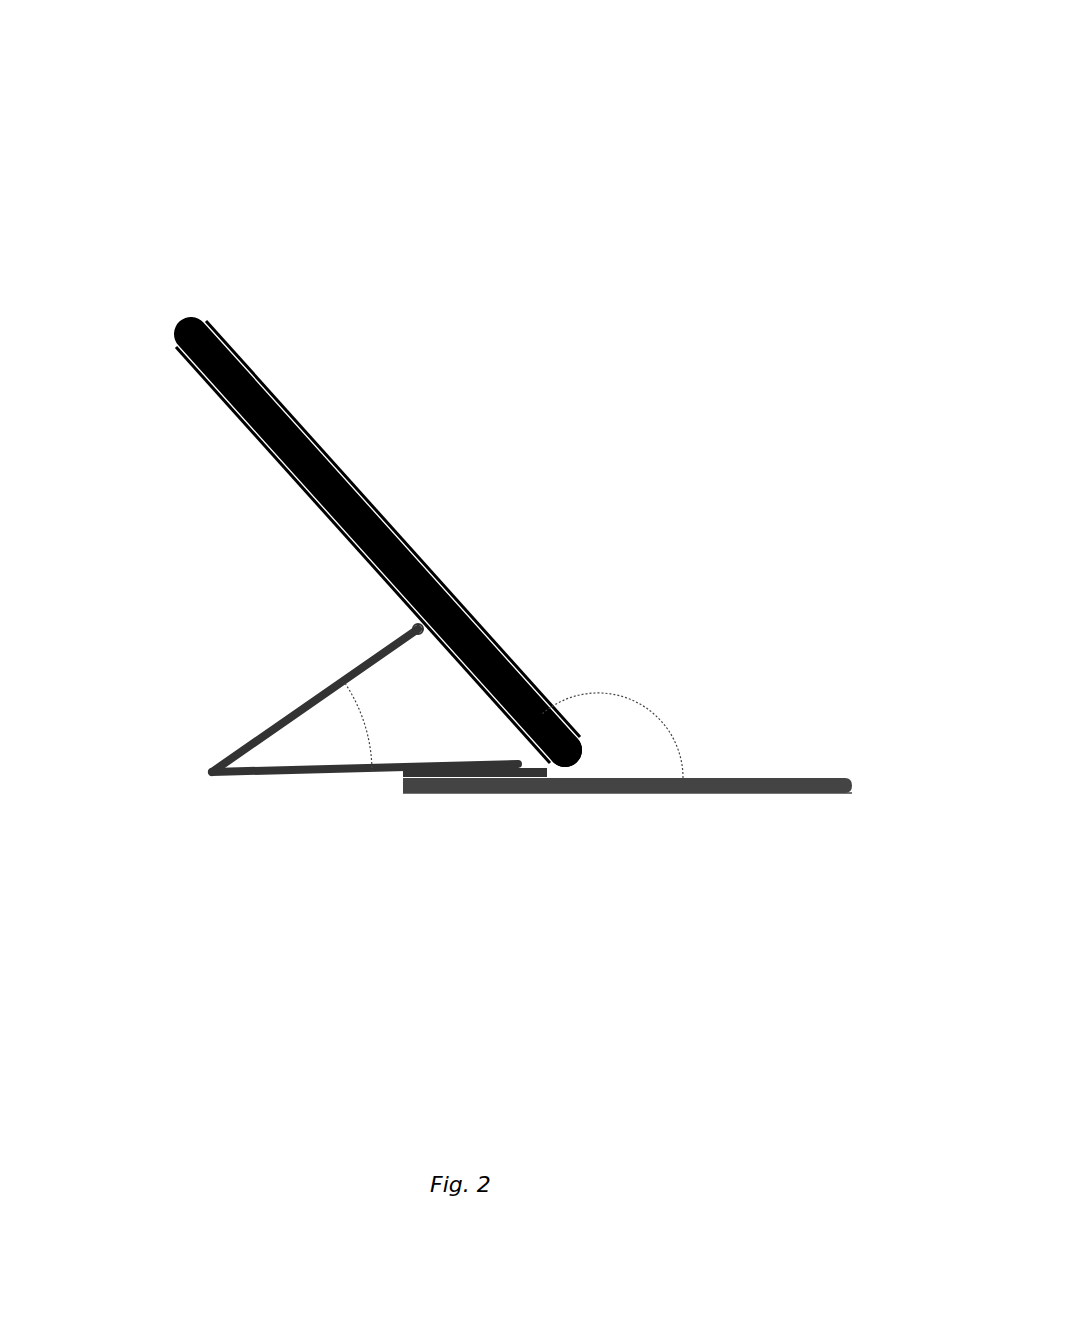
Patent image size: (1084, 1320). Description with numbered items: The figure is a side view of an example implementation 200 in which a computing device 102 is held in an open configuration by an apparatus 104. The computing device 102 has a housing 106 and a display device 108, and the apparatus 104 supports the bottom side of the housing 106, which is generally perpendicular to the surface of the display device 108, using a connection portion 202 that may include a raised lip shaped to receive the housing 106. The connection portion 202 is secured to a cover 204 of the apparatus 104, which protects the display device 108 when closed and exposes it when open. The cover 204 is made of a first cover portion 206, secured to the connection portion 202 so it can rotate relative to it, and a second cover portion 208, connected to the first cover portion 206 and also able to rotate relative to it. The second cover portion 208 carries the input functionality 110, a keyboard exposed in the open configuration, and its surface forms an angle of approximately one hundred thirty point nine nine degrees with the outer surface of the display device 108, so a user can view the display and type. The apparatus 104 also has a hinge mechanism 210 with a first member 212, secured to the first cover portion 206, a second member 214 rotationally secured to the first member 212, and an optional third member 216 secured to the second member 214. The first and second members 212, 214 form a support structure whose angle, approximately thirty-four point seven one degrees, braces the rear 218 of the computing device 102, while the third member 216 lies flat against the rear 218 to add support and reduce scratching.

The example implementation 200 is at (245, 70).
The computing device 102 is at (196, 292).
The apparatus 104 is at (337, 858).
The housing 106 is at (318, 512).
The display device 108 is at (388, 500).
The input functionality 110 is at (777, 757).
The connection portion 202 is at (582, 768).
The cover 204 is at (803, 840).
The first cover portion 206 is at (405, 778).
The second cover portion 208 is at (485, 785).
The hinge mechanism 210 is at (240, 660).
The first member 212 is at (352, 762).
The second member 214 is at (268, 732).
The third member 216 is at (393, 598).
The rear 218 is at (230, 460).